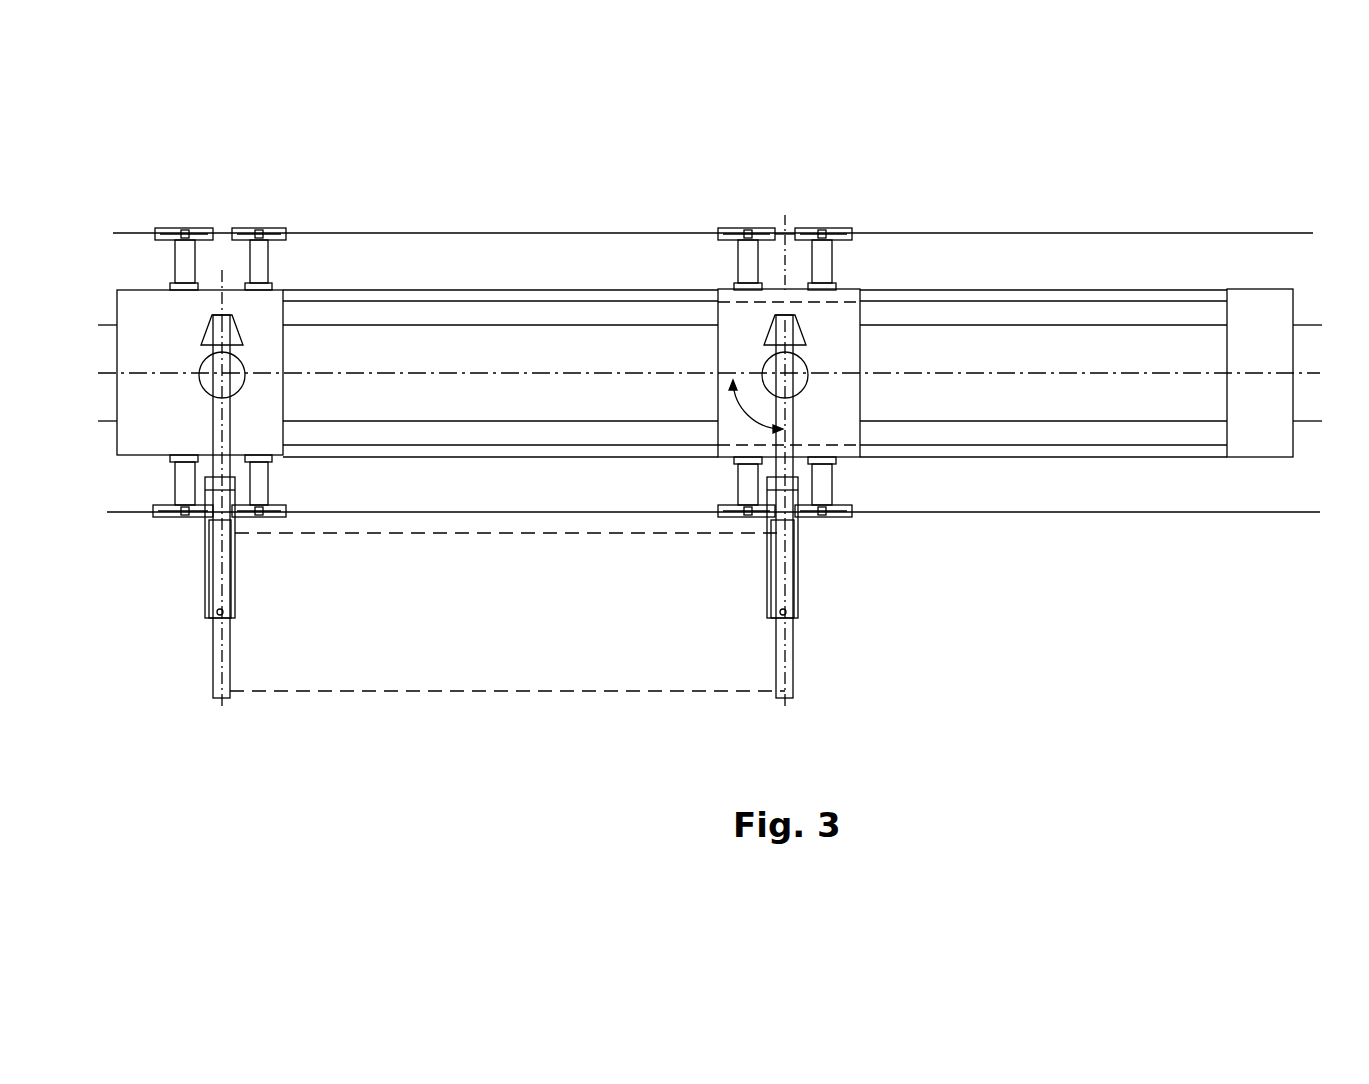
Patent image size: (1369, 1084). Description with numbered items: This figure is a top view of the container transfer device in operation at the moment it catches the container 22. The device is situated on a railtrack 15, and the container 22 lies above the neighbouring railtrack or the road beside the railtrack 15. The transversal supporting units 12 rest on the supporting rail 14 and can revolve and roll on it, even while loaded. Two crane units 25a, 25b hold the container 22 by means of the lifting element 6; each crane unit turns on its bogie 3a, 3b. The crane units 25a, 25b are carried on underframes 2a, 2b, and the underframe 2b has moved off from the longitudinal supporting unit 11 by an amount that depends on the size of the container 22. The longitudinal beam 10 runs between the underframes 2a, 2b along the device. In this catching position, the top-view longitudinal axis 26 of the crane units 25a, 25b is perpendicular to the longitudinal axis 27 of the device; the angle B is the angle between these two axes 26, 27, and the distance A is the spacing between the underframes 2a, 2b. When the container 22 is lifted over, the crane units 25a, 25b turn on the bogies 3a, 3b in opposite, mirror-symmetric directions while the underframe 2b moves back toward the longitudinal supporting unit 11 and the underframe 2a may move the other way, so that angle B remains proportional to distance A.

The underframe 2a is at (137, 290).
The underframe 2b is at (724, 296).
The bogie 3a is at (200, 372).
The bogie 3b is at (802, 370).
The lifting element 6 is at (212, 628).
The guide beam 10 is at (390, 300).
The longitudinal supporting unit 11 is at (1270, 300).
The transversal supporting unit 12 is at (808, 228).
The supporting rail 14 is at (1232, 233).
The railtrack 15 is at (1305, 325).
The container 22 is at (590, 680).
The crane unit 25a is at (205, 540).
The crane unit 25b is at (800, 578).
The top-view longitudinal axis of the crane unit 26 is at (783, 228).
The longitudinal axis of the device 27 is at (1305, 373).
The distance between the underframes A is at (501, 672).
The angle between the longitudinal axes B is at (756, 406).